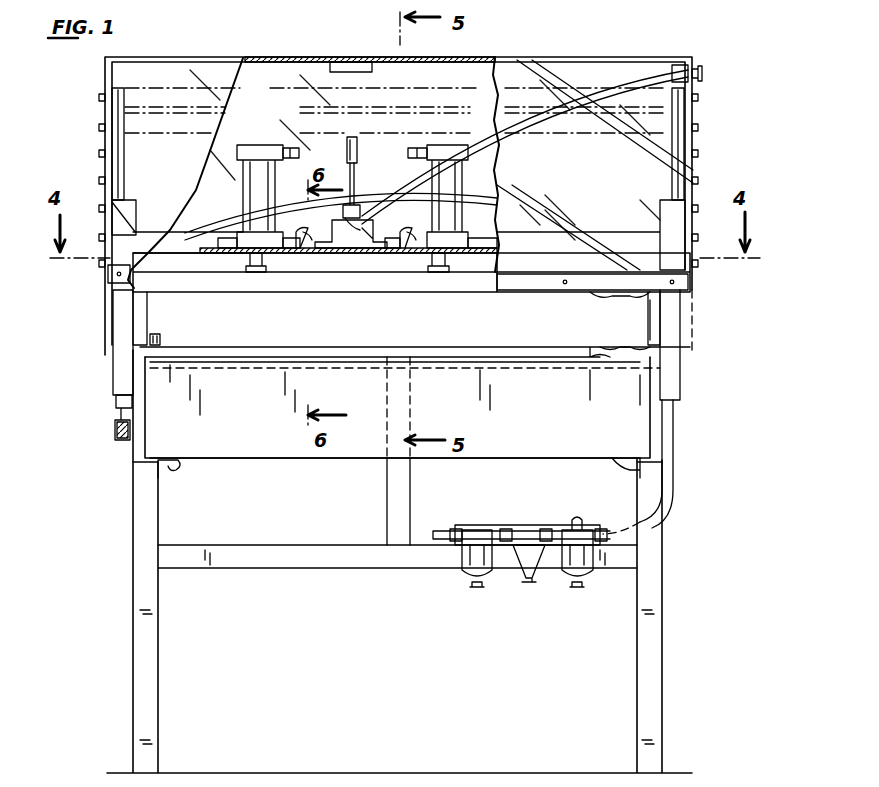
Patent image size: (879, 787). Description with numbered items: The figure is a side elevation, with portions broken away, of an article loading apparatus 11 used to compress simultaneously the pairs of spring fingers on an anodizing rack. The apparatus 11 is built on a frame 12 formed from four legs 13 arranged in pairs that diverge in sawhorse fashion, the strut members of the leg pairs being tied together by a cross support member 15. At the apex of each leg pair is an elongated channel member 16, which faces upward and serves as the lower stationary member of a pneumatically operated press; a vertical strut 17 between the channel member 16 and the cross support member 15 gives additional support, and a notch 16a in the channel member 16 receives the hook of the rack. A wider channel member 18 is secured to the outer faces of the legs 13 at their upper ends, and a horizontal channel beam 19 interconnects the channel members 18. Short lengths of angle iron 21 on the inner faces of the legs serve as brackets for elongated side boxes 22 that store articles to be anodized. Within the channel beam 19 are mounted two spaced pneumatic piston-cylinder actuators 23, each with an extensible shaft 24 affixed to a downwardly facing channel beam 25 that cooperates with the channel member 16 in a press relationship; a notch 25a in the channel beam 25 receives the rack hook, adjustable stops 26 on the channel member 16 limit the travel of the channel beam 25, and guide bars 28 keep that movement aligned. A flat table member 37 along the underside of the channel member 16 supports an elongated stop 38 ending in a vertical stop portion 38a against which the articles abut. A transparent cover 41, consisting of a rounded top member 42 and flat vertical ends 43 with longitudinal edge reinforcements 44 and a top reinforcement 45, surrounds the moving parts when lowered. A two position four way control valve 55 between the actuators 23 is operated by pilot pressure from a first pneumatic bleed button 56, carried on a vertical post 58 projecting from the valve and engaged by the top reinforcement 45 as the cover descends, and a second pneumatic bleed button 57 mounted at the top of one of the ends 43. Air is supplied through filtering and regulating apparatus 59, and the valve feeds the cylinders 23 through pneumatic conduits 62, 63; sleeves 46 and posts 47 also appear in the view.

The article loading apparatus 11 is at (764, 52).
The frame 12 is at (677, 674).
The legs 13 is at (150, 696).
The cross support member 15 is at (318, 566).
The channel member 16 is at (470, 362).
The notch 16a is at (628, 364).
The vertical strut 17 is at (386, 498).
The channel member 18 is at (122, 310).
The channel beam 19 is at (170, 232).
The angle iron 21 is at (180, 466).
The side boxes 22 is at (296, 462).
The pneumatic piston-cylinder actuators 23 is at (255, 148).
The extensible shaft 24 is at (246, 262).
The channel beam 25 is at (497, 280).
The notch 25a is at (612, 296).
The adjustable stops 26 is at (161, 339).
The guide bar 28 is at (148, 310).
The table member 37 is at (336, 350).
The elongated stop 38 is at (432, 350).
The vertical stop portion 38a is at (364, 358).
The transparent cover 41 is at (581, 51).
The top member 42 is at (594, 70).
The ends 43 is at (104, 114).
The longitudinal edge reinforcements 44 is at (558, 292).
The top reinforcement 45 is at (356, 72).
The guide post 46 is at (124, 120).
The guide post sleeve 47 is at (120, 100).
The control valve 55 is at (356, 250).
The first pneumatic bleed button 56 is at (357, 138).
The second pneumatic bleed button 57 is at (700, 68).
The vertical post 58 is at (356, 185).
The filtering and regulating apparatus 59 is at (526, 520).
The pneumatic conduit 62 is at (292, 148).
The pneumatic conduit 63 is at (303, 250).